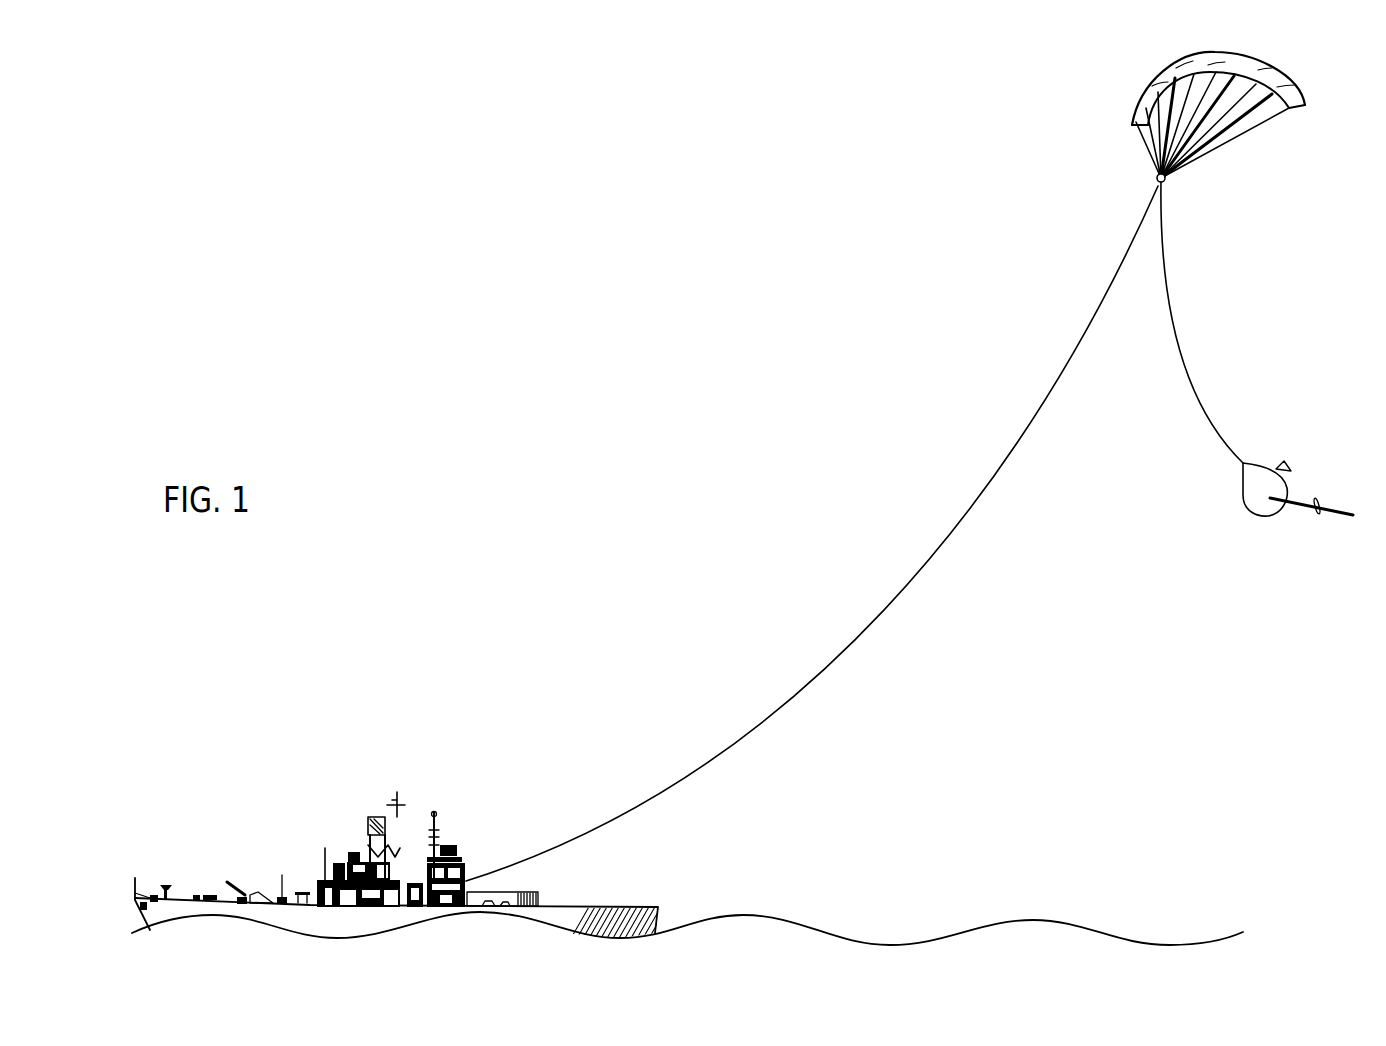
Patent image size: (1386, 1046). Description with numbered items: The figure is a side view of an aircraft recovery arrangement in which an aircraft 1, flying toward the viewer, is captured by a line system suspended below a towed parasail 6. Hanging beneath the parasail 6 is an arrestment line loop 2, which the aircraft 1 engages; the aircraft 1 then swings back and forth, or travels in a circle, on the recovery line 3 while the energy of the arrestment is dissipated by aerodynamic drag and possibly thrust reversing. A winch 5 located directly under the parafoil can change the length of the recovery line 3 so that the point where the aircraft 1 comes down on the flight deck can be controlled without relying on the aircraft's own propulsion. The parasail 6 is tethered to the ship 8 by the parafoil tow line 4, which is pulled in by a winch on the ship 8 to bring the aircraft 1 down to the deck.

The aircraft 1 is at (1337, 503).
The arrestment line loop 2 is at (1252, 513).
The recovery line 3 is at (1168, 297).
The parafoil tow line 4 is at (965, 508).
The winch 5 is at (1156, 180).
The parasail 6 is at (1135, 102).
The ship 8 is at (635, 906).